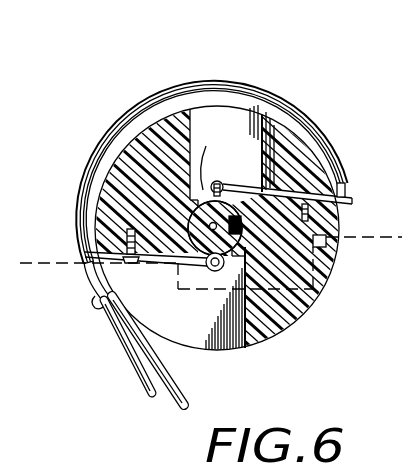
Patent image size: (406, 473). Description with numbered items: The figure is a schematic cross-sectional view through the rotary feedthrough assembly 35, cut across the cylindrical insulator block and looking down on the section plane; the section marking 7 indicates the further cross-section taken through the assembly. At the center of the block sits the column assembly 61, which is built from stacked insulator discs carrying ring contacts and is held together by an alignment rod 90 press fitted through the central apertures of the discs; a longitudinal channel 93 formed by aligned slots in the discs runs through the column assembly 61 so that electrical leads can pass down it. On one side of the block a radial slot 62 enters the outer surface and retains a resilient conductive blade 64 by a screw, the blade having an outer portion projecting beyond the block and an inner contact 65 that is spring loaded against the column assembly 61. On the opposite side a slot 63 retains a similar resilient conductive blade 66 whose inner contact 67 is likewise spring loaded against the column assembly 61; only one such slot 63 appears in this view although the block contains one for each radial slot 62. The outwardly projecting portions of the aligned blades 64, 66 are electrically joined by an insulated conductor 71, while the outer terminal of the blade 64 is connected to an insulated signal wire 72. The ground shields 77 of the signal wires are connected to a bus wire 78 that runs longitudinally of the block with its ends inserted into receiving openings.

The rotary feedthrough assembly 35 is at (336, 142).
The insulated conductors 71 is at (287, 112).
The slots 63 is at (253, 100).
The alignment rod 90 is at (210, 158).
The inner contact 67 is at (228, 181).
The resilient conductive blade 66 is at (258, 188).
The longitudinal channel 93 is at (328, 250).
The radial slots 62 is at (237, 351).
The column assembly 61 is at (205, 270).
The inner contact 65 is at (216, 272).
The resilient conductive blade 64 is at (172, 268).
The insulated signal wire 72 is at (86, 277).
The bus wire 78 is at (93, 302).
The ground shields 77 is at (103, 320).
The section line 7- 7 is at (30, 268).